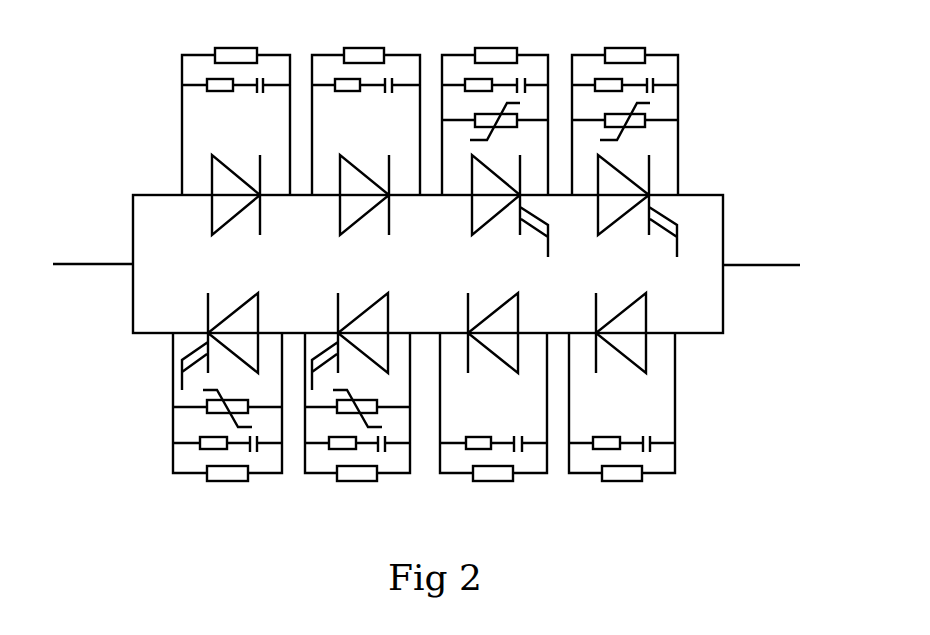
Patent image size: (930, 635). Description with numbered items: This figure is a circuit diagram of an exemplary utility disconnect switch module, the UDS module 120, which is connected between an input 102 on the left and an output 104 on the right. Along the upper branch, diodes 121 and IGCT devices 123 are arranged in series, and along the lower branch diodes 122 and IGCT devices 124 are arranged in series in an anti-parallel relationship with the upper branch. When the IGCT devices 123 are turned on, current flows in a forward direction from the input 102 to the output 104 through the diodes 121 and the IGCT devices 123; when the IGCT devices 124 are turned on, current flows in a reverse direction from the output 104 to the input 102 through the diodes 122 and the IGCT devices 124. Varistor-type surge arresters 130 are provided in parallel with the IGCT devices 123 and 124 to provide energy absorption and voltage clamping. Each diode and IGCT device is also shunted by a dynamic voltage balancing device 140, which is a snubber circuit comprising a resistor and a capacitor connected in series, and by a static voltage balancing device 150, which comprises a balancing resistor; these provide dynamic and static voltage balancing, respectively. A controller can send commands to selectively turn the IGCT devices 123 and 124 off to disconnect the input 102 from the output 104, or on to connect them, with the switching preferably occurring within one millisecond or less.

The input 102 is at (92, 263).
The output 104 is at (752, 264).
The UDS module 120 is at (713, 33).
The diodes 121 is at (211, 202).
The diodes 122 is at (519, 298).
The IGCT devices 123 is at (471, 202).
The IGCT devices 124 is at (259, 298).
The varistor-type surge arresters 130 is at (500, 130).
The dynamic voltage balancing devices 140 is at (237, 93).
The static voltage balancing devices 150 is at (233, 47).